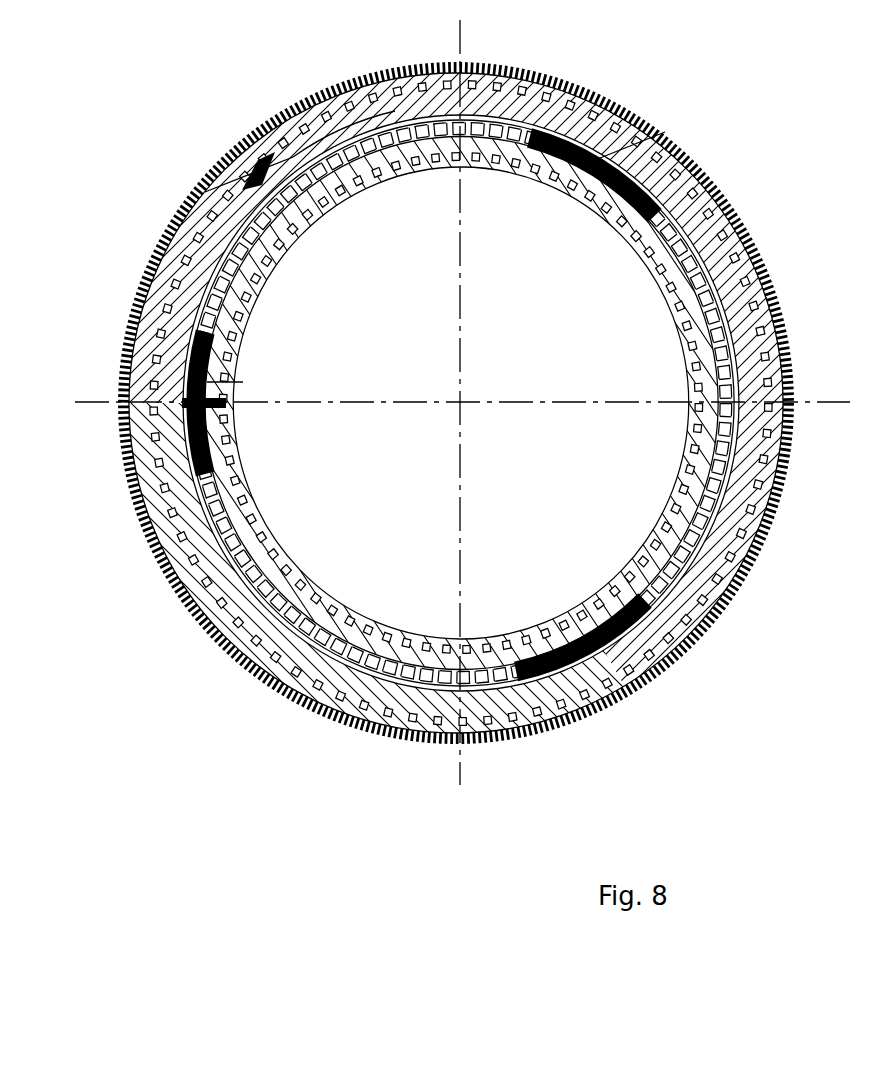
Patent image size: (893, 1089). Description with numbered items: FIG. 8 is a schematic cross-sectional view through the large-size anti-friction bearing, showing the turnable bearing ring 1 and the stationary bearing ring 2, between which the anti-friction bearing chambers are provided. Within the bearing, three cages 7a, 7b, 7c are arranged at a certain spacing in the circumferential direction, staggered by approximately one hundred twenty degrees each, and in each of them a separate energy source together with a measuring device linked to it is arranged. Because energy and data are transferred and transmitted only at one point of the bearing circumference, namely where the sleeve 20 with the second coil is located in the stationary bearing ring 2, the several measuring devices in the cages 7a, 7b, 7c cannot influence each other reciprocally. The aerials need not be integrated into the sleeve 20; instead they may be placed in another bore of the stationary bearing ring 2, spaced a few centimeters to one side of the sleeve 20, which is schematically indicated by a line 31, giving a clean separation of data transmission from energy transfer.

The turnable bearing ring 1 is at (152, 508).
The stationary bearing ring 2 is at (690, 302).
The cage 7a is at (193, 400).
The cage 7b is at (665, 132).
The cage 7c is at (618, 670).
The sleeve 20 is at (222, 413).
The line 31 is at (212, 382).